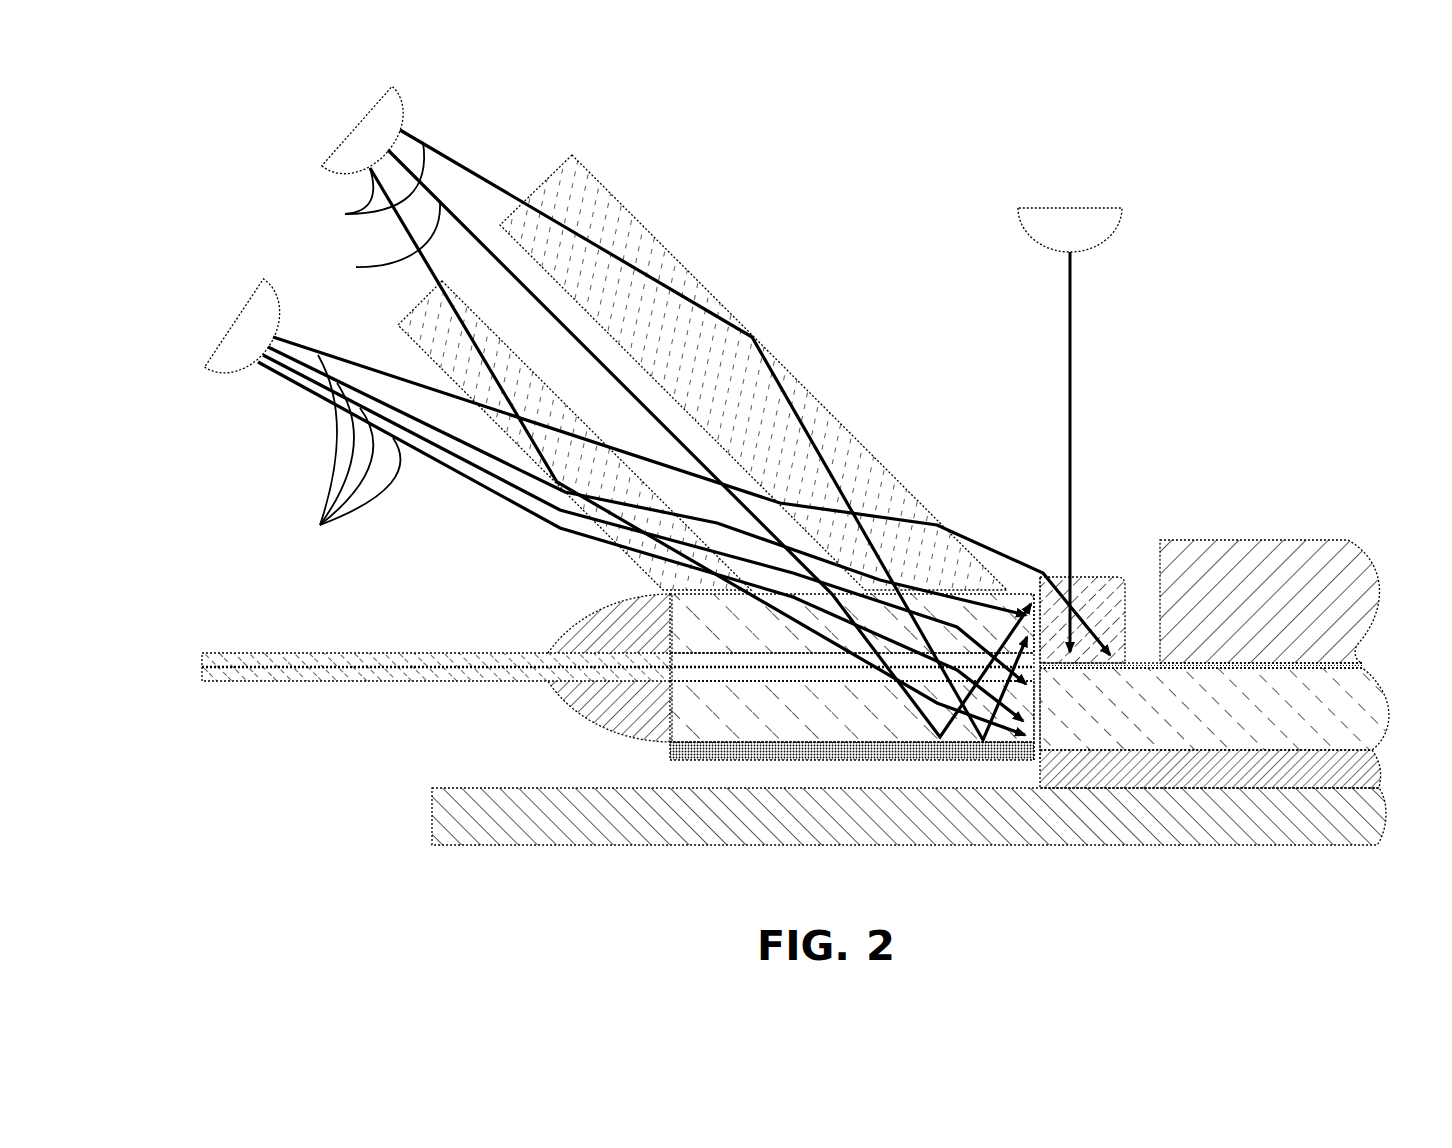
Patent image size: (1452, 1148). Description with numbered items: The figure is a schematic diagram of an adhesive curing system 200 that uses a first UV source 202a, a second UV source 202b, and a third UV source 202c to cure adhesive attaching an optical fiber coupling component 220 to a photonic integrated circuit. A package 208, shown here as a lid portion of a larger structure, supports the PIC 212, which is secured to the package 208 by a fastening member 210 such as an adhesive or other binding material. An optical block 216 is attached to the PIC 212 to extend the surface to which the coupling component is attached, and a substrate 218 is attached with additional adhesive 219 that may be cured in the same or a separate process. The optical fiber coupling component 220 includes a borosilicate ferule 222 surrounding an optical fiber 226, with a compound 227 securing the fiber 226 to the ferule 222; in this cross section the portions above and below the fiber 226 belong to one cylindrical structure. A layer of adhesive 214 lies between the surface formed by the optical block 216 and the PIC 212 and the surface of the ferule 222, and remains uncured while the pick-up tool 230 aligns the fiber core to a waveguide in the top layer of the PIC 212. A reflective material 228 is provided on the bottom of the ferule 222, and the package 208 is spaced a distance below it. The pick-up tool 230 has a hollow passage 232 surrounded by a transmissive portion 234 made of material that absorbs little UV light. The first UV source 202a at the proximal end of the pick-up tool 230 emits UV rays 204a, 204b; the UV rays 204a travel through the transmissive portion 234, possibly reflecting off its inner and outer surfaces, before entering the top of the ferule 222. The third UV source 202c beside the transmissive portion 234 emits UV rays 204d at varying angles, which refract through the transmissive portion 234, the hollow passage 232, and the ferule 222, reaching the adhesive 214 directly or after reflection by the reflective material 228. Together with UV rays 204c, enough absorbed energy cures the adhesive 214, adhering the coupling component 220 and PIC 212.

The adhesive curing system 200 is at (241, 153).
The first UV source 202a is at (328, 131).
The second UV source 202b is at (987, 233).
The third UV source 202c is at (196, 351).
The UV rays 204a is at (345, 214).
The UV rays 204b is at (356, 267).
The UV rays 204c is at (1072, 306).
The UV rays 204d is at (329, 453).
The package 208 is at (1210, 846).
The fastening member 210 is at (1370, 760).
The PIC 212 is at (1380, 683).
The adhesive 214 is at (1040, 752).
The optical block 216 is at (1077, 577).
The substrate 218 is at (1220, 540).
The additional adhesive 219 is at (1362, 661).
The optical fiber coupling component 220 is at (522, 697).
The borosilicate ferule 222 is at (612, 612).
The optical fiber 226 is at (306, 683).
The compound 227 is at (612, 617).
The reflective material 228 is at (733, 762).
The pick-up tool 230 is at (366, 311).
The hollow passage 232 is at (487, 233).
The transmissive portion 234 is at (620, 200).